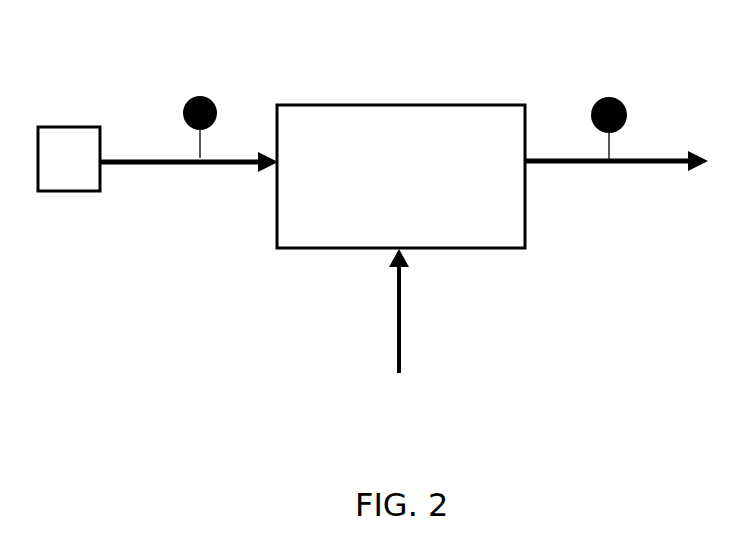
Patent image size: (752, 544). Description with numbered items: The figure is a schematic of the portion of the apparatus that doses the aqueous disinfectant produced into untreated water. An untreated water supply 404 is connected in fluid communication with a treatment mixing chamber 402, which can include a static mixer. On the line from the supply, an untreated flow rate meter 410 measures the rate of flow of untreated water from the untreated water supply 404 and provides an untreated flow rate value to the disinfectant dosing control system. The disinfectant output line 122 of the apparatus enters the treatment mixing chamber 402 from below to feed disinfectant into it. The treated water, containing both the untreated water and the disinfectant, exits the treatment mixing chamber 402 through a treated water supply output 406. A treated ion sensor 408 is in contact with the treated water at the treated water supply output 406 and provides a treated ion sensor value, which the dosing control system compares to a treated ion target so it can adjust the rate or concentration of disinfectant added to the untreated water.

The treatment mixing chamber 402 is at (321, 98).
The untreated water supply 404 is at (69, 172).
The treated water supply output 406 is at (616, 176).
The treated ion sensor 408 is at (631, 128).
The untreated flow rate meter 410 is at (181, 127).
The disinfectant output line 122 is at (419, 311).